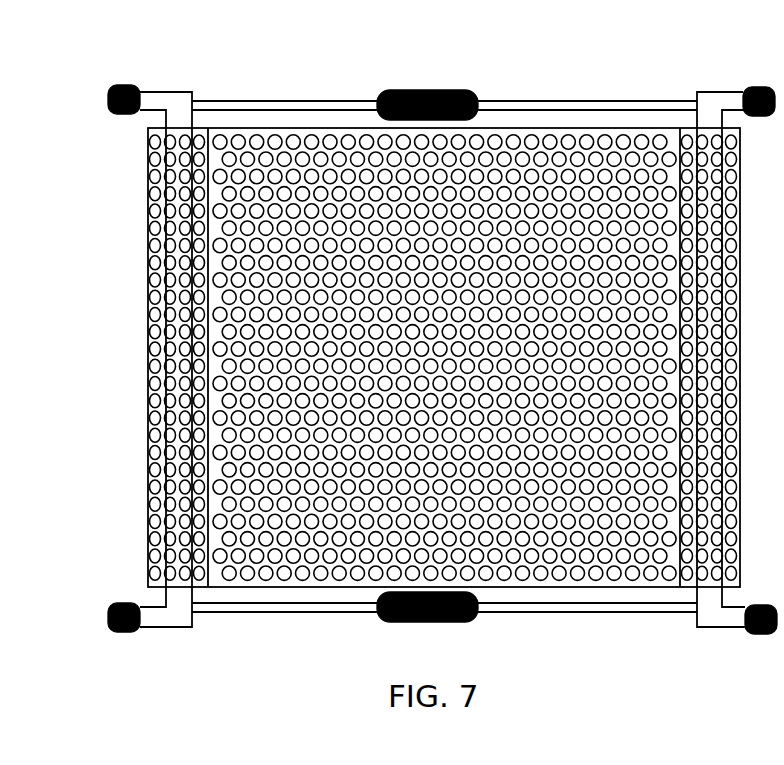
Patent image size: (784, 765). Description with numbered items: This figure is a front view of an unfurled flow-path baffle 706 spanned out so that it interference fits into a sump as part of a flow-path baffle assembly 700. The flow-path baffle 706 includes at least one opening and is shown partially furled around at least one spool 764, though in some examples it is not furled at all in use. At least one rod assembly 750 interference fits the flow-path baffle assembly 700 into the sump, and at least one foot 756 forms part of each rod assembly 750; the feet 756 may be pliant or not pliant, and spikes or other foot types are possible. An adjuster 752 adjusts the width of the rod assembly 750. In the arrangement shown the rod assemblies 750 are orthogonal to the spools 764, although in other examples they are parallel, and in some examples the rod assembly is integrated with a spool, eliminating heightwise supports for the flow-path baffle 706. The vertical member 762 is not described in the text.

The flow-path baffle assembly 700 is at (522, 67).
The flow-path baffle 706 is at (225, 137).
The rod assembly 750 is at (588, 91).
The adjuster 752 is at (428, 90).
The foot 756 is at (138, 91).
The vertical frame tube 762 is at (180, 92).
The spool 764 is at (152, 201).